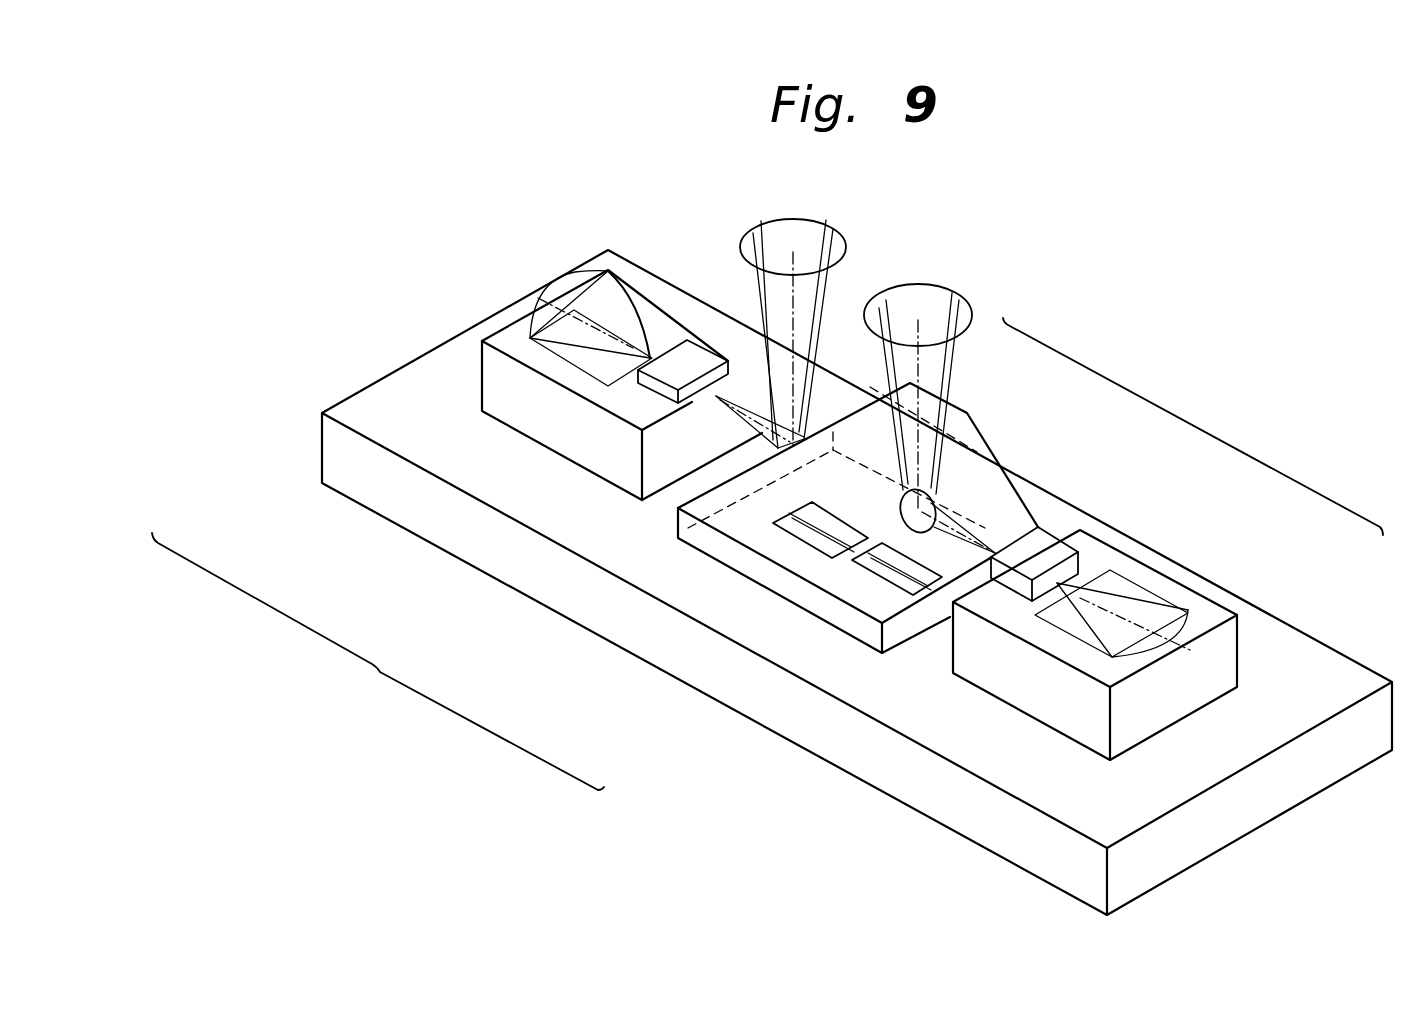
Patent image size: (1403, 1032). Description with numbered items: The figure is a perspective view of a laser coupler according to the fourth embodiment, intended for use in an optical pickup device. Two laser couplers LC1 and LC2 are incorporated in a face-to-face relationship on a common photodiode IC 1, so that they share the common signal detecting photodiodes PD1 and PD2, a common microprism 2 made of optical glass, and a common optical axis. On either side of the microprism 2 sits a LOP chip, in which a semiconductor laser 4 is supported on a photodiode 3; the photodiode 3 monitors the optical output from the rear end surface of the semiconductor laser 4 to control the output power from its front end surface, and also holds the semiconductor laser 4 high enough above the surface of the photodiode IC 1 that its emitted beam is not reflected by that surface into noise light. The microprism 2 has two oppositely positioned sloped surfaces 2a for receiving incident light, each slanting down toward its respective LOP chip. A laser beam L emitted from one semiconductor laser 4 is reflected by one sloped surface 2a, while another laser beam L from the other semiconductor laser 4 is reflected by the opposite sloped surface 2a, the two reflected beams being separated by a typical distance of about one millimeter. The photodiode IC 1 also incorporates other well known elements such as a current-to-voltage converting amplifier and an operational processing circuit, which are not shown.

The photodiode IC 1 is at (833, 743).
The microprism 2 is at (733, 542).
The sloped surface 2a is at (840, 422).
The photodiode 3 is at (553, 365).
The semiconductor laser 4 is at (683, 357).
The laser beam L is at (752, 430).
The laser coupler LC1 is at (1197, 425).
The laser coupler LC2 is at (377, 675).
The photodiode PD1 is at (873, 576).
The photodiode PD2 is at (793, 537).